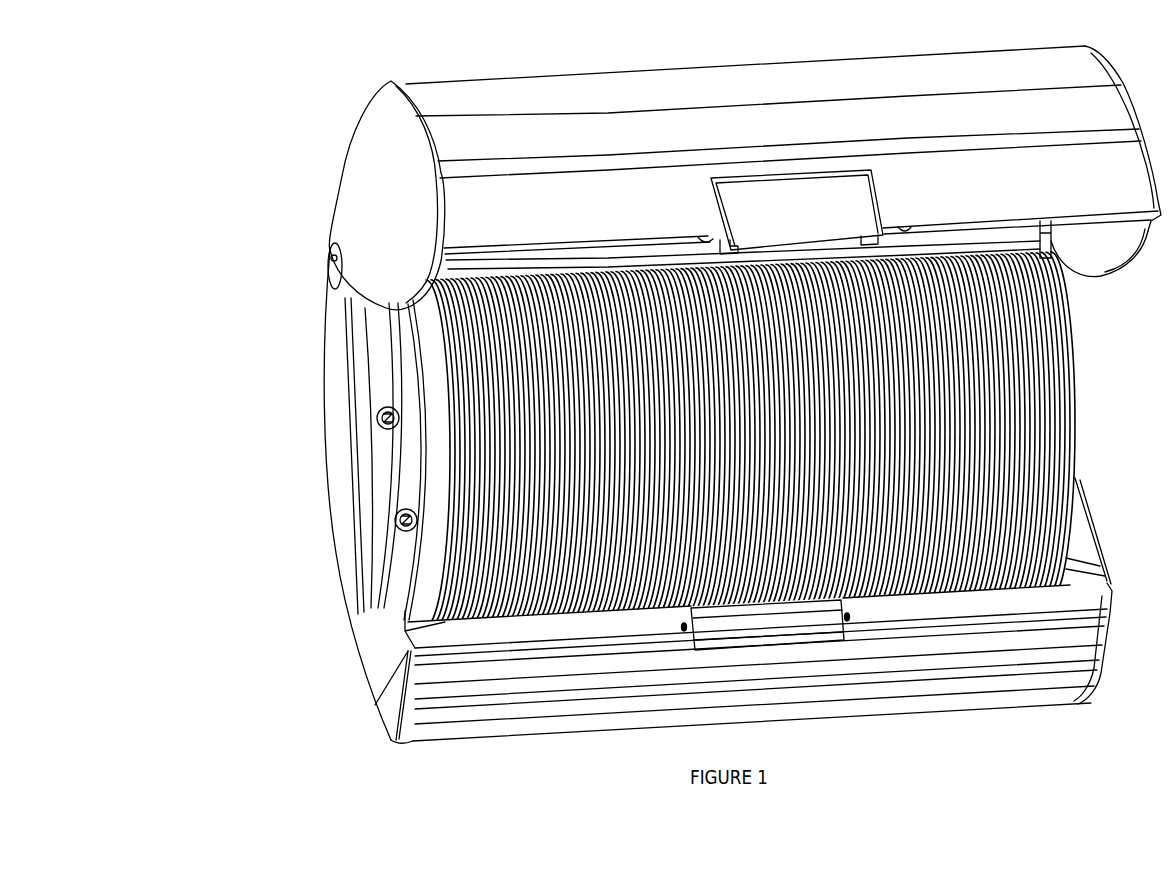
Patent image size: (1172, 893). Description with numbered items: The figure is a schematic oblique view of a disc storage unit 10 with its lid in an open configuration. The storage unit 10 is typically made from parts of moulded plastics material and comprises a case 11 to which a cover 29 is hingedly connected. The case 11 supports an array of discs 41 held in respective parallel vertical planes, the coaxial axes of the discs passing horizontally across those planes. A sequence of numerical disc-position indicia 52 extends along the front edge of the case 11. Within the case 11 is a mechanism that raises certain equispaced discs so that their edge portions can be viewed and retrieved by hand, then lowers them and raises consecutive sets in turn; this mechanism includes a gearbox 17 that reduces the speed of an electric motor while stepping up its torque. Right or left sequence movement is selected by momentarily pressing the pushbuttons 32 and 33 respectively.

The disc storage unit 10 is at (205, 193).
The case 11 is at (338, 572).
The gearbox 17 is at (1085, 548).
The cover 29 is at (368, 122).
The pushbutton 32 is at (370, 405).
The pushbutton 33 is at (388, 506).
The array of discs 41 is at (1040, 359).
The numerical disc-position indicia 52 is at (975, 585).